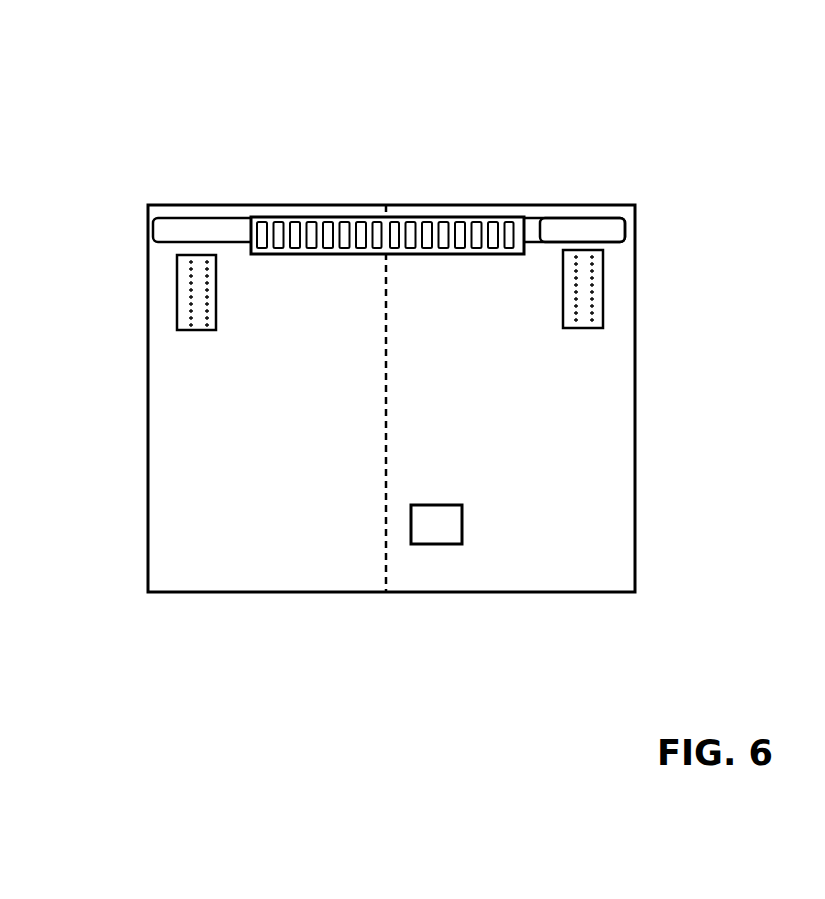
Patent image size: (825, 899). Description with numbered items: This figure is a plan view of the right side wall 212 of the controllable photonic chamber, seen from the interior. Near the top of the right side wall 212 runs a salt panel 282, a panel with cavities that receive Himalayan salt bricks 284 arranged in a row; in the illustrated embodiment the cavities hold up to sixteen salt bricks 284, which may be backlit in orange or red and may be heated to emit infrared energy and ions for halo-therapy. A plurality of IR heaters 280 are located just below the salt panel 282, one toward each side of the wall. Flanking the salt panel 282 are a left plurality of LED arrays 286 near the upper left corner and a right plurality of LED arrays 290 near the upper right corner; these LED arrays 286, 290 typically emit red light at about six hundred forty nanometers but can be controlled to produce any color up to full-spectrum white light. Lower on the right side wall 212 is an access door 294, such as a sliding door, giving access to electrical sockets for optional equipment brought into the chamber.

The right side wall 212 is at (334, 88).
The IR heaters 280 is at (173, 310).
The salt panel 282 is at (381, 183).
The salt bricks 284 is at (294, 229).
The left plurality of LED arrays 286 is at (178, 229).
The right plurality of LED arrays 290 is at (602, 228).
The access door 294 is at (429, 530).